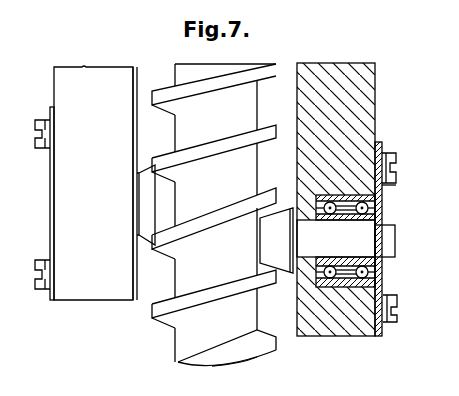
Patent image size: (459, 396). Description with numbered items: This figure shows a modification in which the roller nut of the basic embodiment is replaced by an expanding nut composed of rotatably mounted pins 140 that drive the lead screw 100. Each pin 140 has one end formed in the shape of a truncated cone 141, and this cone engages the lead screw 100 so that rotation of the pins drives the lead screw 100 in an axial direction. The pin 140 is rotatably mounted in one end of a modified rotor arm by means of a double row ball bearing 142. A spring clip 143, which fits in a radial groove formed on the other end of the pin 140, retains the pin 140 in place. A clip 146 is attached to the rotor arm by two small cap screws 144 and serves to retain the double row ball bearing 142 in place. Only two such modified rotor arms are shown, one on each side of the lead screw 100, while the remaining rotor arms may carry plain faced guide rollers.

The lead screw 100 is at (246, 63).
The truncated cone 141 is at (146, 200).
The pin 140 is at (370, 240).
The double row ball bearing 142 is at (382, 185).
The spring clip 143 is at (380, 262).
The cap screw 144 is at (41, 120).
The clip 146 is at (51, 109).